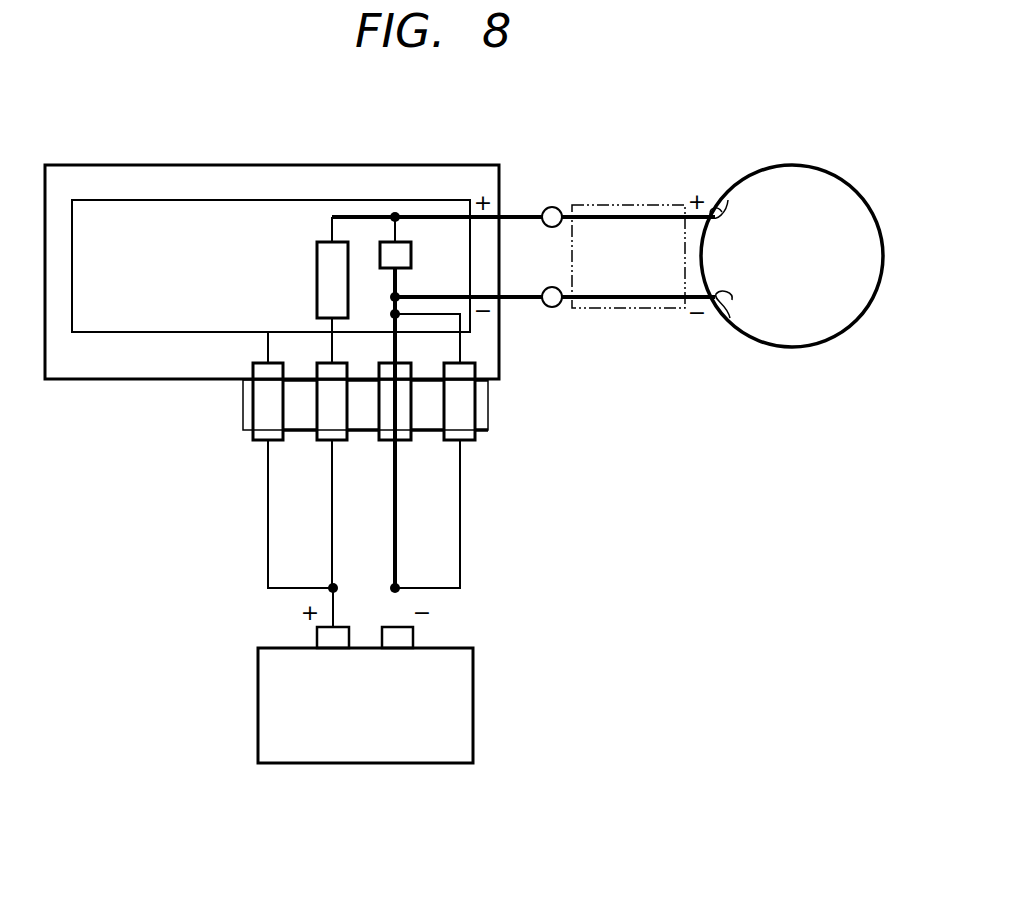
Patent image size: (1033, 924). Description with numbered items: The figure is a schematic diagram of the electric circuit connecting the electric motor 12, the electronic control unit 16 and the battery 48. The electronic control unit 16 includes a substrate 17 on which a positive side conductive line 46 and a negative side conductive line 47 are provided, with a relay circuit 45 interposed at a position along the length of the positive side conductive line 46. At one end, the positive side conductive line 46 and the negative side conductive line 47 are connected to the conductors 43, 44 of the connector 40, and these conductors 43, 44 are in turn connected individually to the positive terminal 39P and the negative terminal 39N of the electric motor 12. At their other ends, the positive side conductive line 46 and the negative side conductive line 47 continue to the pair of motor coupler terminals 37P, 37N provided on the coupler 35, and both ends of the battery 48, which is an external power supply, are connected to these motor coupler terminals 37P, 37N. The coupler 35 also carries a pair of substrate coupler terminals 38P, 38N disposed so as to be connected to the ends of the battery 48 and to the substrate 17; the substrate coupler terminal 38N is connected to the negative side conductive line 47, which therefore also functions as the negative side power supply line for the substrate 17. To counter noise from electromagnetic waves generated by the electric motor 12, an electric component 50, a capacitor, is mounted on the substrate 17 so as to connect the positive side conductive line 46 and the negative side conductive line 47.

The electric motor 12 is at (801, 269).
The electronic control unit 16 is at (185, 200).
The substrate 17 is at (250, 214).
The coupler 35 is at (238, 410).
The motor coupler terminal 37P is at (327, 443).
The motor coupler terminal 37N is at (403, 443).
The substrate coupler terminal 38P is at (263, 443).
The substrate coupler terminal 38N is at (468, 443).
The positive terminal 39P is at (728, 200).
The negative terminal 39N is at (730, 318).
The connector 40 is at (645, 206).
The conductor 43 is at (604, 212).
The conductor 44 is at (622, 308).
The relay circuit 45 is at (318, 275).
The positive side conductive line 46 is at (355, 217).
The negative side conductive line 47 is at (444, 297).
The battery 48 is at (349, 710).
The electric component 50 is at (400, 254).